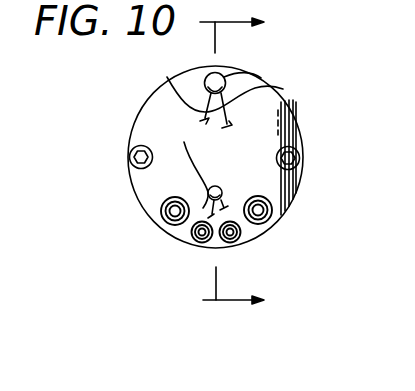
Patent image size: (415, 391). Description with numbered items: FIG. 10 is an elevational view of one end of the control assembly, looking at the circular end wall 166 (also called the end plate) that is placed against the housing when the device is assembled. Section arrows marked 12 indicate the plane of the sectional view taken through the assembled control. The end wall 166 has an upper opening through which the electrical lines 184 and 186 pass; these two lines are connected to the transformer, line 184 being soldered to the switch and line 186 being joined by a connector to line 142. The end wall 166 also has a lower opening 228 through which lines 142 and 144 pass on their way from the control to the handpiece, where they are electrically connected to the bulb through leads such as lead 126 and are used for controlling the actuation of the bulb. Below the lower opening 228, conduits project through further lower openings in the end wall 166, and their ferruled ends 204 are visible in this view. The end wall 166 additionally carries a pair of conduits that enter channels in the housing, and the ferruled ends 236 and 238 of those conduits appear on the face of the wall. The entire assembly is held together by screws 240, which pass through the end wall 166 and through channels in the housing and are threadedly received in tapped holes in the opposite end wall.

The section line 12 is at (247, 163).
The lead 126 is at (225, 78).
The line 184 is at (275, 89).
The line 186 is at (172, 77).
The screws 240 is at (131, 157).
The lower opening 228 is at (178, 165).
The end wall 166 is at (242, 164).
The line 144 is at (208, 203).
The line 142 is at (224, 204).
The ferruled end 238 is at (166, 214).
The ferruled end 236 is at (272, 212).
The ferruled end 204 is at (209, 240).